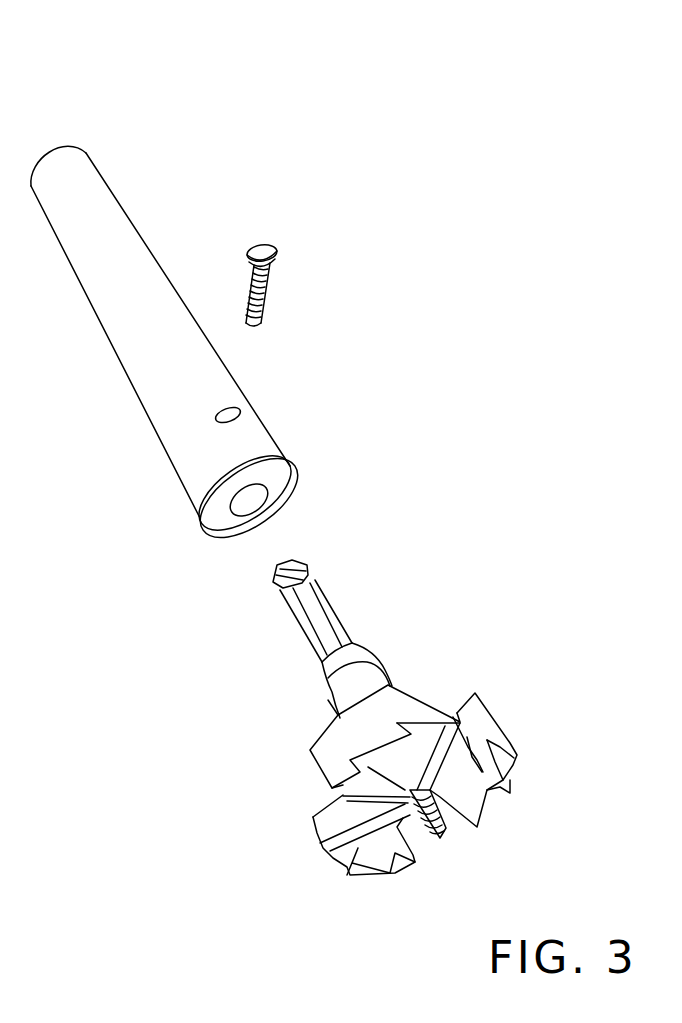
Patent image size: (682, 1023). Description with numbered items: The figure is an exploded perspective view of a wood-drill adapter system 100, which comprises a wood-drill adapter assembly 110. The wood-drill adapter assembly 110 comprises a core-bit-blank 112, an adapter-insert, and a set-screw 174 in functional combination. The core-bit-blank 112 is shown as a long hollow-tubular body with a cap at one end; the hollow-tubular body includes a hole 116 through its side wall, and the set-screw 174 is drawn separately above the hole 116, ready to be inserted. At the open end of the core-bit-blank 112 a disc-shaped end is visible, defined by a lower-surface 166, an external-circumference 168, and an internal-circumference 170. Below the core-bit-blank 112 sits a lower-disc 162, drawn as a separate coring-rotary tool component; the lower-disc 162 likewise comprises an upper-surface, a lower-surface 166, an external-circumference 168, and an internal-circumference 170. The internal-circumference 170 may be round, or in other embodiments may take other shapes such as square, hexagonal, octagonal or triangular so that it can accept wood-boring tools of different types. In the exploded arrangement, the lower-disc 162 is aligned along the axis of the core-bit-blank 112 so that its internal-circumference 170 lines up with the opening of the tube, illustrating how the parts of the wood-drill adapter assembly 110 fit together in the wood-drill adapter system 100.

The wood-drill adapter system 100 is at (387, 100).
The wood-drill adapter assembly 110 is at (420, 127).
The core-bit-blank 112 is at (120, 237).
The hole 116 is at (230, 413).
The lower-surface 166 is at (280, 478).
The external-circumference 168 is at (198, 517).
The internal-circumference 170 is at (262, 498).
The set-screw 174 is at (263, 250).
The lower-disc 162 is at (227, 580).